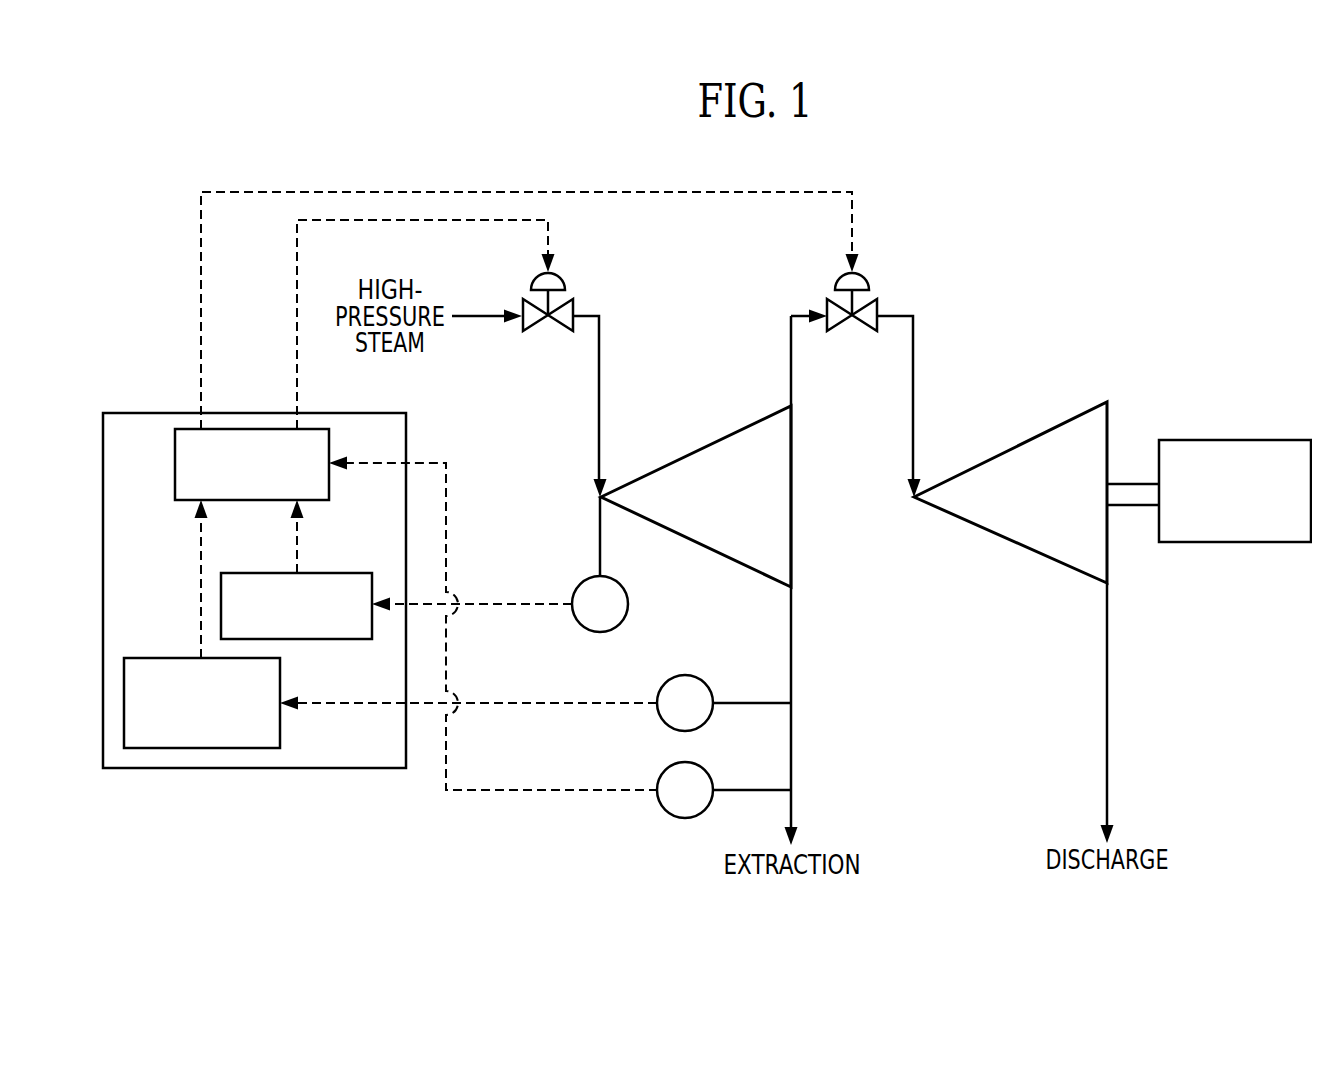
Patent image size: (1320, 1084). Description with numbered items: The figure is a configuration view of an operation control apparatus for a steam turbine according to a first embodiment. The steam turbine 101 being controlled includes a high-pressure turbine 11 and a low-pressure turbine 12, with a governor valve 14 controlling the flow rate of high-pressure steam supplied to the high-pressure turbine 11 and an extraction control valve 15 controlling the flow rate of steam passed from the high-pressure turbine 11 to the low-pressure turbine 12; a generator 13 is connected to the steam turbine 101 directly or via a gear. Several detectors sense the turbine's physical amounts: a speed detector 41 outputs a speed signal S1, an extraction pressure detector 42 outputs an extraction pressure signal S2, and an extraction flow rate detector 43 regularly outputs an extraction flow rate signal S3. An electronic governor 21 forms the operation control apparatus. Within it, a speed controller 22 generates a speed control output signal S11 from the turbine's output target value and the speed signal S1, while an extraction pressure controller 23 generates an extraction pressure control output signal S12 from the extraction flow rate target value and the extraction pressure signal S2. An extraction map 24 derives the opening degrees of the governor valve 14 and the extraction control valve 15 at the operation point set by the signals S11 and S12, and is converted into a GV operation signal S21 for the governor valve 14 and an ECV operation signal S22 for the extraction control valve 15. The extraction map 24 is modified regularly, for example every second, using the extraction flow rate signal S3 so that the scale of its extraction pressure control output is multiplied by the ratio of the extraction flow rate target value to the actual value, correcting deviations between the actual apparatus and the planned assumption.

The high-pressure turbine 11 is at (702, 440).
The low-pressure turbine 12 is at (1016, 440).
The generator 13 is at (1241, 440).
The governor valve 14 is at (565, 277).
The extraction control valve 15 is at (866, 278).
The electronic governor 21 is at (243, 769).
The speed controller 22 is at (327, 639).
The extraction pressure controller 23 is at (280, 731).
The extraction map 24 is at (175, 487).
The speed detector 41 is at (628, 604).
The extraction pressure detector 42 is at (706, 685).
The extraction flow rate detector 43 is at (685, 818).
The steam turbine 101 is at (939, 842).
The speed signal S1 is at (540, 606).
The extraction pressure signal S2 is at (572, 705).
The extraction flow rate signal S3 is at (575, 792).
The speed control output signal S11 is at (298, 563).
The extraction pressure control output signal S12 is at (200, 618).
The GV operation signal S21 is at (460, 222).
The ECV operation signal S22 is at (624, 190).